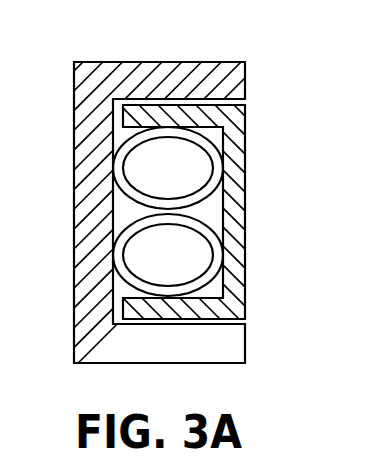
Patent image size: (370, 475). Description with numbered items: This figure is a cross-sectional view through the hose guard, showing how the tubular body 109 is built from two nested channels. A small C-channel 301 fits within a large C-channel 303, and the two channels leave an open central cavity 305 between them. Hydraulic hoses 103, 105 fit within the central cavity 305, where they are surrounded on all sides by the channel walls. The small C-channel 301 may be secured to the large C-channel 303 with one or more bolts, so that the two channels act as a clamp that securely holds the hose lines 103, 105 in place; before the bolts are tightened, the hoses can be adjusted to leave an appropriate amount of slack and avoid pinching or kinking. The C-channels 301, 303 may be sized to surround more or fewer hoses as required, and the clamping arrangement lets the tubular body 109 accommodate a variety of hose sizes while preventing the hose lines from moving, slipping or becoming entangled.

The tubular body 109 is at (185, 220).
The hydraulic hose 103 is at (185, 200).
The hydraulic hose 105 is at (222, 275).
The small C-channel 301 is at (247, 225).
The large C-channel 303 is at (75, 332).
The central cavity 305 is at (123, 215).